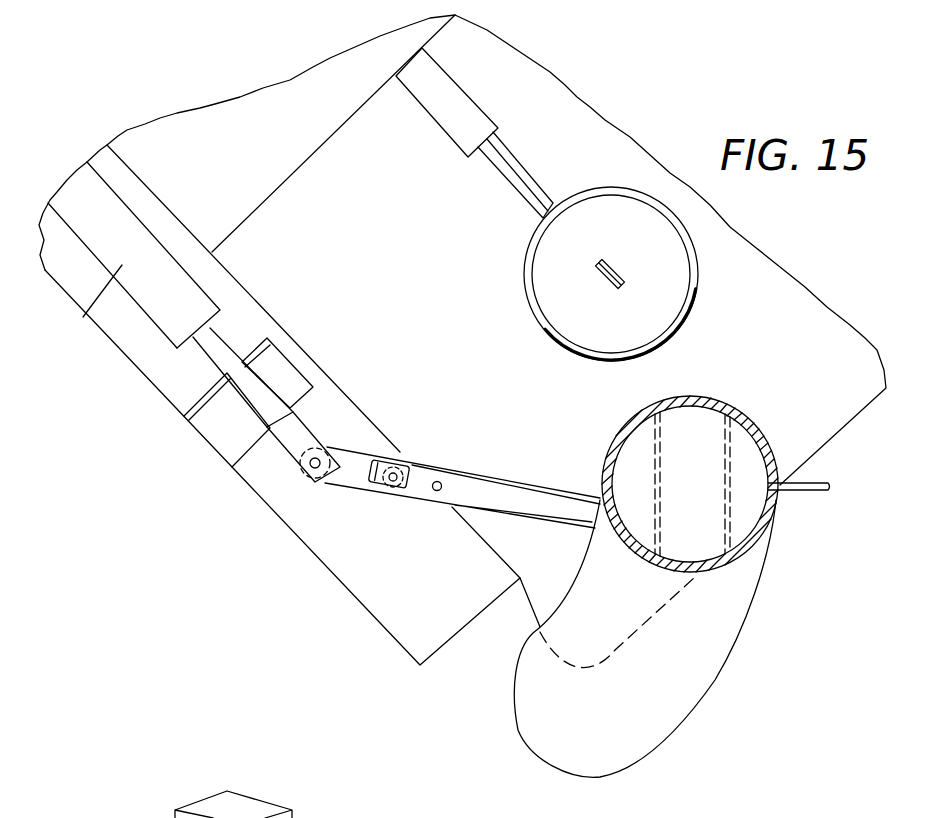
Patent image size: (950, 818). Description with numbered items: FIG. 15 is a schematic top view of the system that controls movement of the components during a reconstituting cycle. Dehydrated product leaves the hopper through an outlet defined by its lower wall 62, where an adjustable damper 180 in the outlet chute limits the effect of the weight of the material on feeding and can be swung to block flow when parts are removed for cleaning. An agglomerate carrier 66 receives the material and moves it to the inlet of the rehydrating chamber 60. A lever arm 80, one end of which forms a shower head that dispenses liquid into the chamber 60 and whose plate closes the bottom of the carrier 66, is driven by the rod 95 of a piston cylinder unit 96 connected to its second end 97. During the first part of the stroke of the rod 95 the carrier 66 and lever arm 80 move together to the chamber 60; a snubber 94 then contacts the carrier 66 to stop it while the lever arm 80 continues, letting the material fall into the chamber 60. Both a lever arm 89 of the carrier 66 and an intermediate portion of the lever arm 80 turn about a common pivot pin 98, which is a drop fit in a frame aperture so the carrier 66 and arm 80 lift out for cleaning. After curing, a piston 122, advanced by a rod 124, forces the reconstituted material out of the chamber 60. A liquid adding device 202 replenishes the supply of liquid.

The rehydrating chamber 60 is at (533, 303).
The lower wall 62 is at (747, 420).
The agglomerate carrier 66 is at (514, 714).
The lever arm 80 is at (357, 447).
The lever arm of the carrier 89 is at (498, 502).
The snubber 94 is at (508, 182).
The drive rod 95 is at (219, 352).
The piston cylinder unit 96 is at (83, 317).
The second end of the lever arm 97 is at (354, 480).
The pivot pin 98 is at (398, 470).
The piston 122 is at (588, 203).
The rod 124 is at (612, 268).
The damper 180 is at (753, 452).
The liquid adding device 202 is at (242, 793).